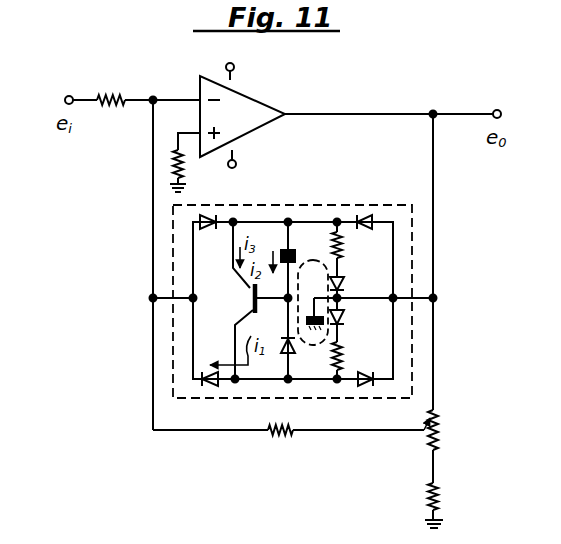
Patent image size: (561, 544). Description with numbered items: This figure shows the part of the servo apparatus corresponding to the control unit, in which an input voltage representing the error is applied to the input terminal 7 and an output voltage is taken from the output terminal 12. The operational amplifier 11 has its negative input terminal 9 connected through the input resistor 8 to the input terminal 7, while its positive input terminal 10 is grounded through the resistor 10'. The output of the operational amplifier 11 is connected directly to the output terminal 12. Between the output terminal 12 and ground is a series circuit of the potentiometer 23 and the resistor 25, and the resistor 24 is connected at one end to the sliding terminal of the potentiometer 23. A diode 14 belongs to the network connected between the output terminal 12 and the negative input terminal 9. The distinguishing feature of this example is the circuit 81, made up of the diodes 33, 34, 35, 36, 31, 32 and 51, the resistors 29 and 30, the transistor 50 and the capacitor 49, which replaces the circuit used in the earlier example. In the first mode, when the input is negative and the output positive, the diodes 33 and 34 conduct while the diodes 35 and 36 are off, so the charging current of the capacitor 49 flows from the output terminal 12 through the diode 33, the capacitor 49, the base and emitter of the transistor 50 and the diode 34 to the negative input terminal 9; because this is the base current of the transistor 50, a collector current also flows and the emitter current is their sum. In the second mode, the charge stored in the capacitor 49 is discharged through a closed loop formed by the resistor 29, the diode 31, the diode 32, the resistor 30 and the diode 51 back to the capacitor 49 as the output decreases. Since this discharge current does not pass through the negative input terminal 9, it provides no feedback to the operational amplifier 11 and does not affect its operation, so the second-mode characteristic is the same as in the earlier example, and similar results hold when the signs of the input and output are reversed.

The input terminal 7 is at (69, 96).
The input resistor 8 is at (110, 106).
The negative input terminal 9 is at (193, 98).
The positive input terminal 10 is at (179, 129).
The resistor 10' is at (196, 173).
The operational amplifier 11 is at (274, 104).
The output terminal 12 is at (497, 109).
The diode 14 is at (304, 266).
The potentiometer 23 is at (440, 440).
The resistor 24 is at (284, 437).
The resistor 25 is at (428, 497).
The resistor 29 is at (345, 246).
The resistor 30 is at (345, 351).
The diode 31 is at (345, 283).
The diode 32 is at (345, 315).
The diode 33 is at (364, 213).
The diode 34 is at (210, 388).
The diode 35 is at (366, 388).
The diode 36 is at (208, 229).
The capacitor 49 is at (296, 256).
The transistor 50 is at (252, 297).
The diode 51 is at (296, 349).
The circuit 81 is at (318, 205).